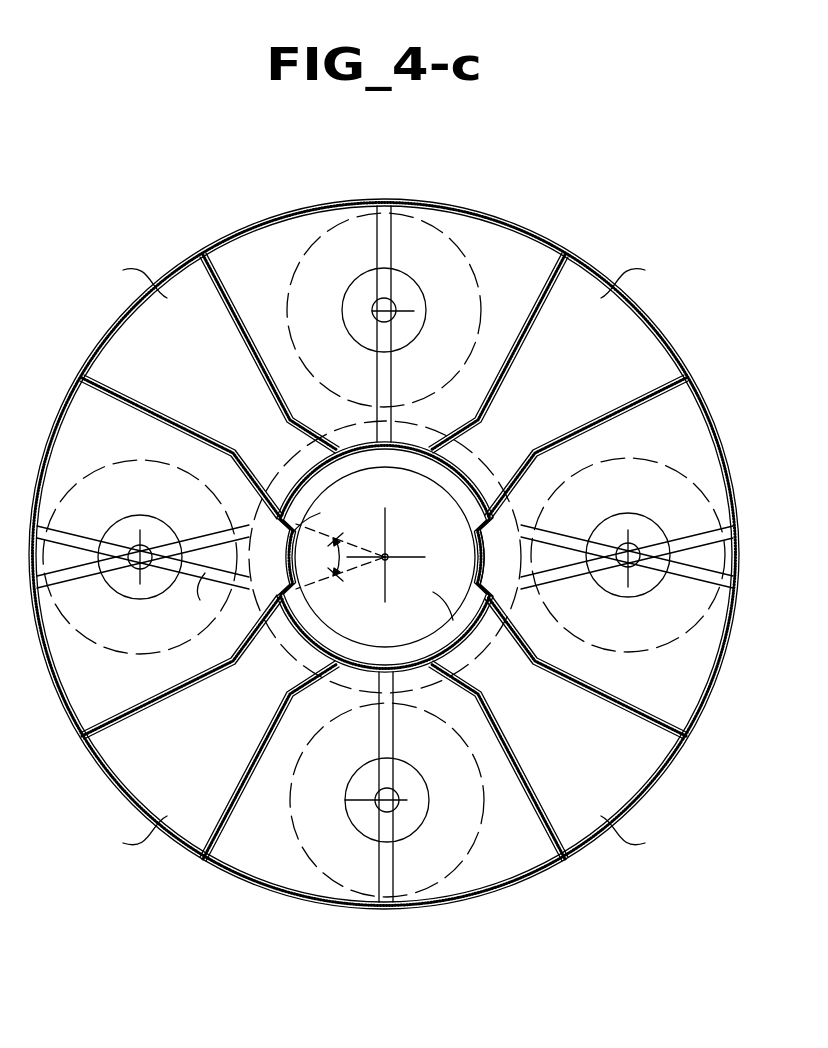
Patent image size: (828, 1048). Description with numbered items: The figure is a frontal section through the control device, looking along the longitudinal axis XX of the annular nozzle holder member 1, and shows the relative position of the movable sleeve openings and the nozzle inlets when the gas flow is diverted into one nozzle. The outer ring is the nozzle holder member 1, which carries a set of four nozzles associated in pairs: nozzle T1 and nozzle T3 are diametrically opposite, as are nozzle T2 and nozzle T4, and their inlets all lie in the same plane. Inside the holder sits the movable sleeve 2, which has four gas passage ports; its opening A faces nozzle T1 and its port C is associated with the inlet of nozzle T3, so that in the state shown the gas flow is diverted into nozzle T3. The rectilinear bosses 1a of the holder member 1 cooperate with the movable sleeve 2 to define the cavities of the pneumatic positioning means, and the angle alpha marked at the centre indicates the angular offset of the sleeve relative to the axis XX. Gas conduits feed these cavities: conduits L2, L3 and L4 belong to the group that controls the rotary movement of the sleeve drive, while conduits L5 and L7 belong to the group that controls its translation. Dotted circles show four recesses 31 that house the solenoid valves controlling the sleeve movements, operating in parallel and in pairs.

The annular nozzle holder member 1 is at (297, 880).
The rectilinear boss 1a is at (510, 550).
The movable sleeve 2 is at (443, 473).
The recess 31 is at (455, 266).
The nozzle T1 is at (129, 275).
The nozzle T2 is at (632, 275).
The nozzle T3 is at (634, 829).
The nozzle T4 is at (129, 829).
The gas conduit L2 is at (565, 540).
The gas conduit L3 is at (203, 540).
The gas conduit L4 is at (184, 599).
The gas conduit L5 is at (430, 386).
The gas conduit L7 is at (388, 725).
The opening A is at (315, 516).
The gas passage port C is at (433, 603).
The longitudinal axis XX is at (389, 555).
The angle alpha is at (340, 556).